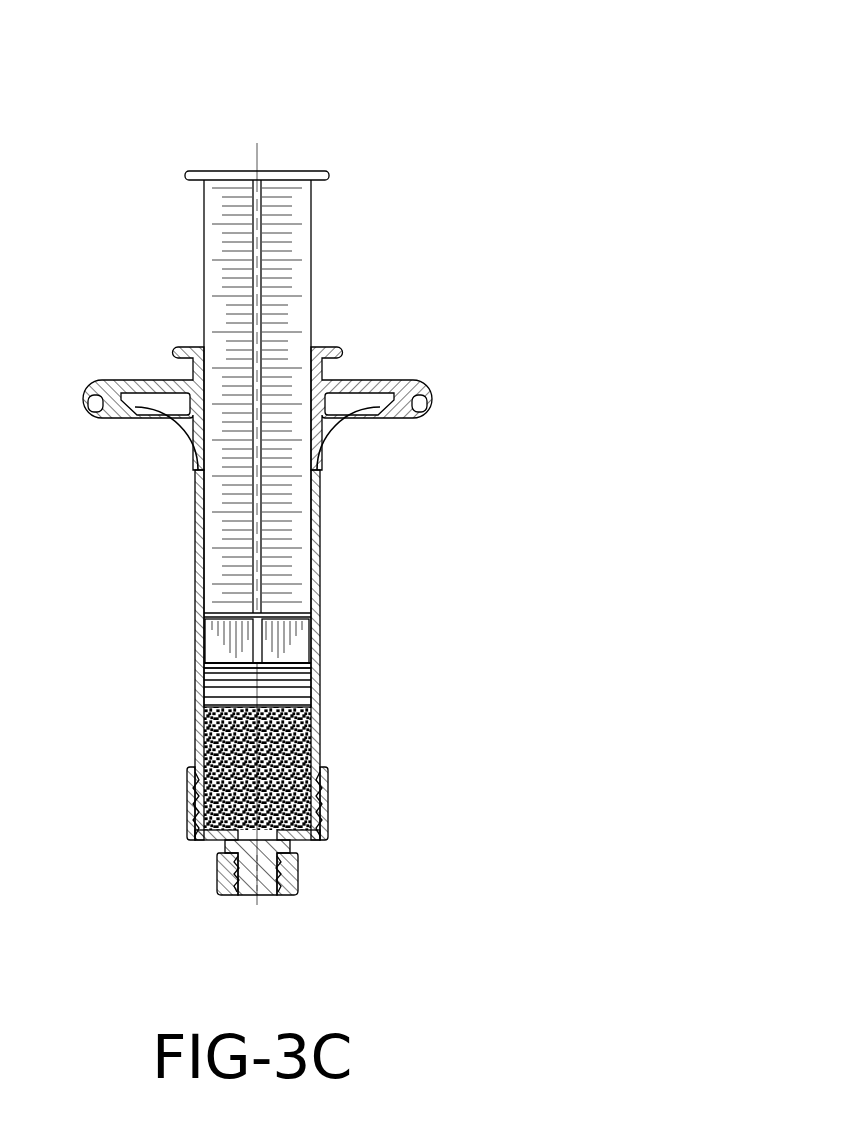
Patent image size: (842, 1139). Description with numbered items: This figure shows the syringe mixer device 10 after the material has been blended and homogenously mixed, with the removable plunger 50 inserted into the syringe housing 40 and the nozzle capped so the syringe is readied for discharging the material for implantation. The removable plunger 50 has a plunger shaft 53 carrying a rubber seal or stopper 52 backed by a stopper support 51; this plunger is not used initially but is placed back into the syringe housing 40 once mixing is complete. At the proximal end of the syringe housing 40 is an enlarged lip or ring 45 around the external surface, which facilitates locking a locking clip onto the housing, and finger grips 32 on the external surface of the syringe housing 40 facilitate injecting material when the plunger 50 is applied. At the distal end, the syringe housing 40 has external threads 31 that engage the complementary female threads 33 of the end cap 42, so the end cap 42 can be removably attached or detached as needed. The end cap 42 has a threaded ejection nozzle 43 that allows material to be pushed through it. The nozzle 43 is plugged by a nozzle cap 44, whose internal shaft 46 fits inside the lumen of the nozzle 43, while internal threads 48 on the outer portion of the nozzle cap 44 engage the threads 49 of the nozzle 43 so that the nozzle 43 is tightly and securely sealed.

The syringe mixer device 10 is at (424, 126).
The removable plunger 50 is at (198, 244).
The plunger shaft 53 is at (278, 265).
The enlarged lip or ring 45 is at (330, 352).
The finger grips 32 is at (135, 407).
The syringe housing 40 is at (190, 540).
The stopper support 51 is at (289, 650).
The rubber seal or stopper 52 is at (213, 677).
The female threads 33 is at (303, 795).
The end cap 42 is at (180, 769).
The external threads 31 is at (194, 818).
The threaded nozzle 43 is at (235, 890).
The internal shaft 46 is at (253, 858).
The nozzle cap 44 is at (308, 867).
The internal threads 48 is at (285, 893).
The threads 49 is at (222, 870).